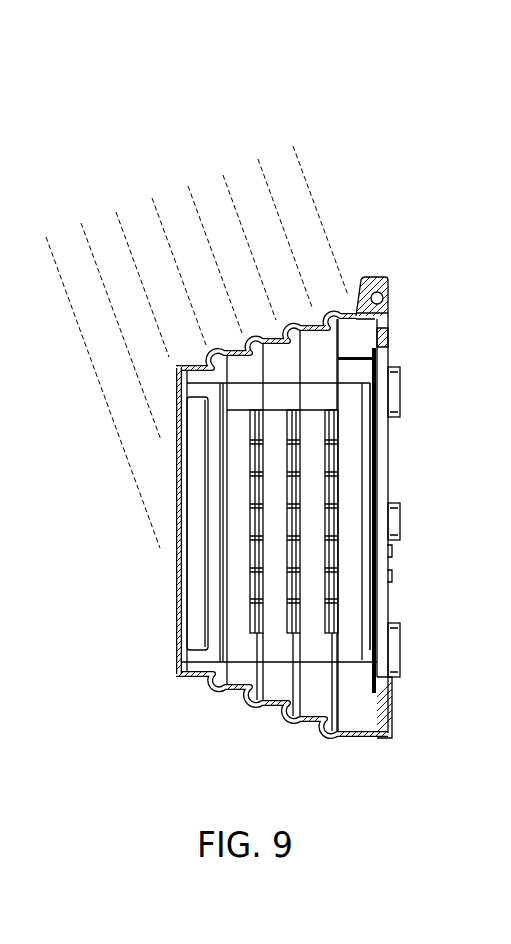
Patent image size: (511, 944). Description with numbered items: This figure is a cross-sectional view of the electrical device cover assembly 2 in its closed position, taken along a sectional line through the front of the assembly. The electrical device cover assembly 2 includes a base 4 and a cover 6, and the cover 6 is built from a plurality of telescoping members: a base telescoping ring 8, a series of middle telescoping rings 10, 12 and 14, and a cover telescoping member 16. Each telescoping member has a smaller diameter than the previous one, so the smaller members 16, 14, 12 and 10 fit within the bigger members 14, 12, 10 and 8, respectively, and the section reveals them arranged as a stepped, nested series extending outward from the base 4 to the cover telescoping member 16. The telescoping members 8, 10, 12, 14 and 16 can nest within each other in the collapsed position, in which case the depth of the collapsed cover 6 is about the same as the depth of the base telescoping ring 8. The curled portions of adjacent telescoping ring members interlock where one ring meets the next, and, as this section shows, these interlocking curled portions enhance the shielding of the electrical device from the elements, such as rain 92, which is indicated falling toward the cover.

The electrical device cover assembly 2 is at (396, 737).
The base 4 is at (382, 342).
The cover 6 is at (202, 706).
The base telescoping ring 8 is at (353, 735).
The middle telescoping ring 10 is at (312, 722).
The middle telescoping ring 12 is at (261, 708).
The middle telescoping ring 14 is at (223, 692).
The cover telescoping member 16 is at (183, 677).
The rain 92 is at (308, 123).